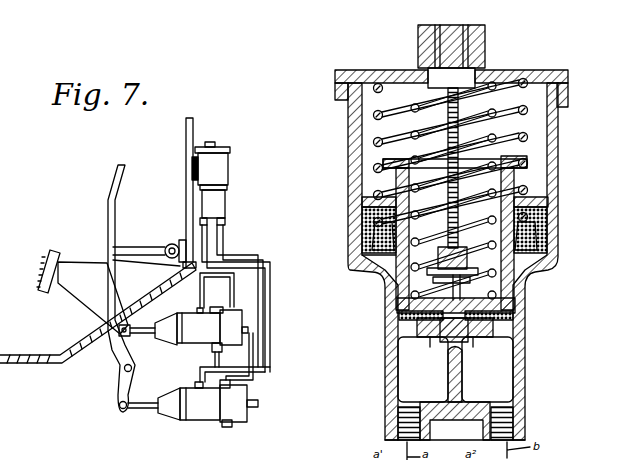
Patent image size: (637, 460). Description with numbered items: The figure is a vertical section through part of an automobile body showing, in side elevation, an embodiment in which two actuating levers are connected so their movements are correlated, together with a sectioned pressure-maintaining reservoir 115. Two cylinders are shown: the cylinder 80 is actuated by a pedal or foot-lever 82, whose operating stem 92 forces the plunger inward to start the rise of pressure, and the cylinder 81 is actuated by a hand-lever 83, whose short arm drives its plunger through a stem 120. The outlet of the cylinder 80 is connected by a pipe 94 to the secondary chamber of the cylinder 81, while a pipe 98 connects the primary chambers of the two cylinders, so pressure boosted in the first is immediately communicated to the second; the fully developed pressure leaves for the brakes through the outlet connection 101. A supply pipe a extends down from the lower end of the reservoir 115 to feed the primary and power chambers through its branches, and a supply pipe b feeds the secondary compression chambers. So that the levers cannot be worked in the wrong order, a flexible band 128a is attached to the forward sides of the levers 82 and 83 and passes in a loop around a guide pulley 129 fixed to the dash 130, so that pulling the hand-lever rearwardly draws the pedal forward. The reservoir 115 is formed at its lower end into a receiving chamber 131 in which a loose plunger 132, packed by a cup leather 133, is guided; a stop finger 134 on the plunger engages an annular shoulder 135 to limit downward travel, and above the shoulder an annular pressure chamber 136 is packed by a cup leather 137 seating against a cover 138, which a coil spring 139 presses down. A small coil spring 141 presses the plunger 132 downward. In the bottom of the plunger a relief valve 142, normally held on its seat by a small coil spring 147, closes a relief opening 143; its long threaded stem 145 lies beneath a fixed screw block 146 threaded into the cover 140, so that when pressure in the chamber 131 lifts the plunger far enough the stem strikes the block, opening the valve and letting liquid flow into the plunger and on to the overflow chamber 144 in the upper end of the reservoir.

The hand-lever 83 is at (107, 220).
The pedal or foot-lever 82 is at (68, 283).
The flexible band 128a is at (172, 244).
The guide pulley 129 is at (149, 227).
The dash 130 is at (186, 168).
The reservoir 115 is at (225, 173).
The supply pipe b is at (222, 233).
The supply pipe a is at (208, 243).
The pipe 94 is at (268, 340).
The pipe 98 is at (213, 355).
The operating stem 92 is at (143, 334).
The cylinder 80 is at (238, 318).
The stem 120 is at (143, 409).
The cylinder 81 is at (212, 422).
The outlet connection 101 is at (256, 400).
The coil spring 141 is at (493, 87).
The cover 140 is at (550, 68).
The fixed screw block 146 is at (451, 78).
The threaded stem 145 is at (447, 100).
The overflow chamber 144 is at (537, 107).
The receiving chamber 131 is at (504, 353).
The coil spring 139 is at (528, 147).
The cover 138 is at (537, 167).
The loose plunger 132 is at (527, 187).
The cup leather 137 is at (553, 210).
The annular pressure chamber 136 is at (540, 243).
The annular shoulder 135 is at (365, 257).
The stop finger 134 is at (382, 273).
The coil spring 147 is at (480, 280).
The packing ring or cup leather 133 is at (397, 322).
The relief valve 142 is at (432, 336).
The relief opening 143 is at (475, 337).